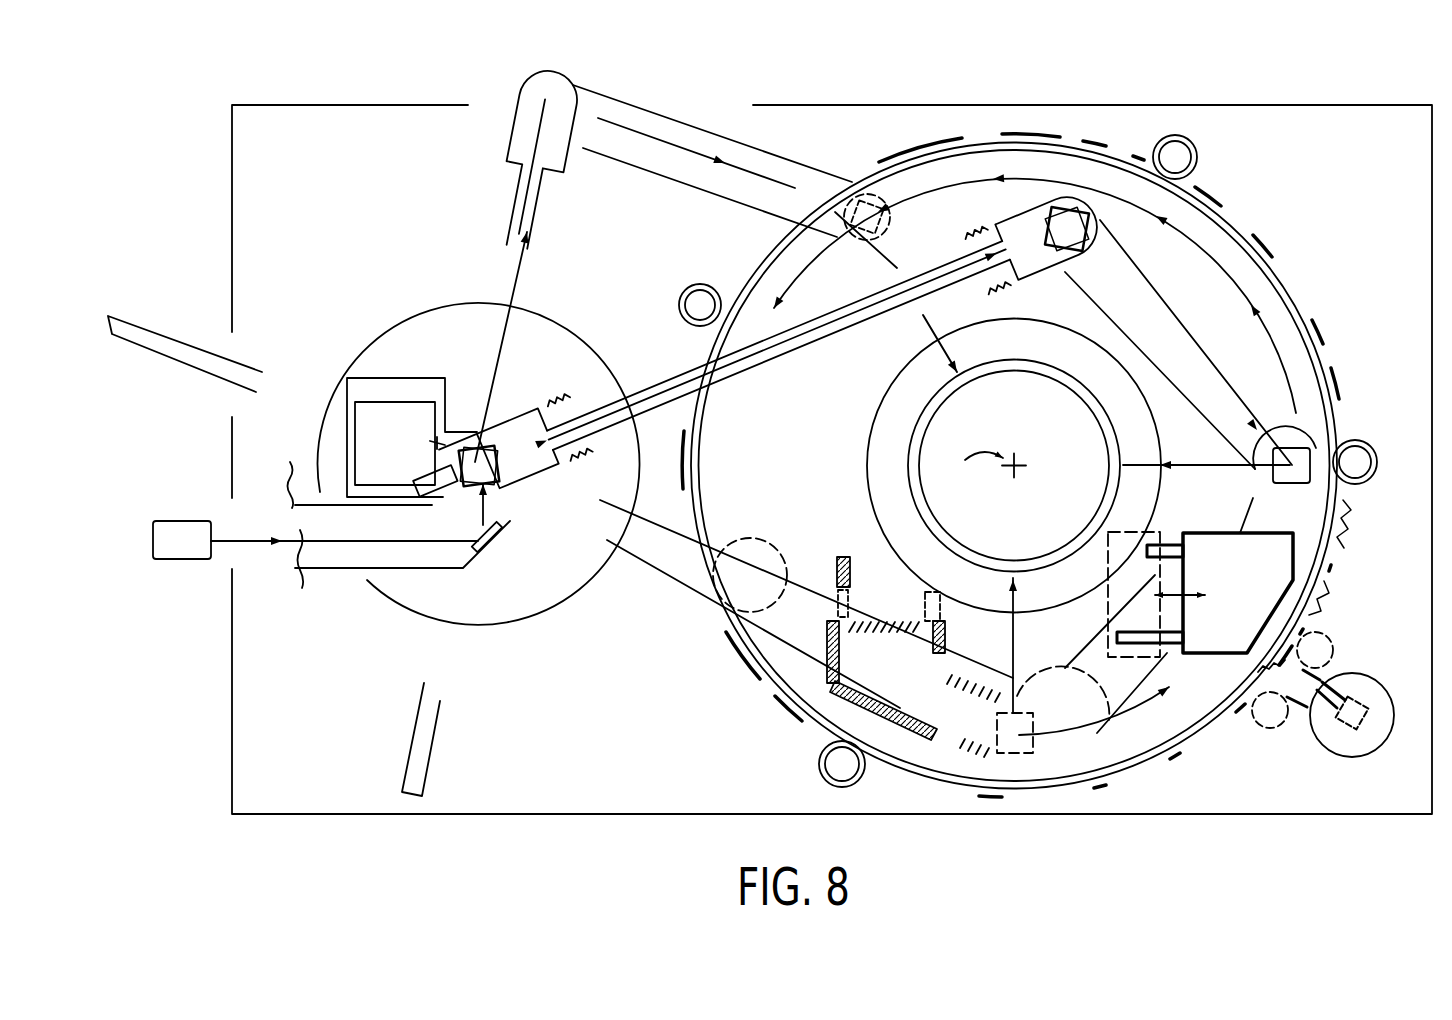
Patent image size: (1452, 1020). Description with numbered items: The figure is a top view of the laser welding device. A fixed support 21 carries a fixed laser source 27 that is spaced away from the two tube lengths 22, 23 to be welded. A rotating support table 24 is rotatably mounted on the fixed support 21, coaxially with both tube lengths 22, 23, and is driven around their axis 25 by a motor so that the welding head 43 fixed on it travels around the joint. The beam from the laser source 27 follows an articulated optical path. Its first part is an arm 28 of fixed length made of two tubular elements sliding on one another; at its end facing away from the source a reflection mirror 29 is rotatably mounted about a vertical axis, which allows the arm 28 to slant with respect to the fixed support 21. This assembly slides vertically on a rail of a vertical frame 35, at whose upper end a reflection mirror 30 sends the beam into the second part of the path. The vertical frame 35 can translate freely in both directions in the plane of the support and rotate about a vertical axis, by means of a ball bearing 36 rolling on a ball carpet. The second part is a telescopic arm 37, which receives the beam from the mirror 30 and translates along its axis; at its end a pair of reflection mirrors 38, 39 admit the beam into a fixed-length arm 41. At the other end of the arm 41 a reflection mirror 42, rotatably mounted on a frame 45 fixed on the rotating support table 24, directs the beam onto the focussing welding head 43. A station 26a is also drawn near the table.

The fixed support 21 is at (327, 709).
The tube length 22 is at (946, 466).
The tube length 23 is at (903, 482).
The rotating support table 24 is at (794, 436).
The axis 25 is at (988, 475).
The discharge station 26a is at (1378, 690).
The laser source 27 is at (186, 530).
The arm 28 is at (386, 509).
The reflection mirror 29 is at (512, 468).
The reflection mirror 30 is at (522, 531).
The vertical frame 35 is at (373, 377).
The ball bearing 36 is at (462, 349).
The telescopic arm 37 is at (655, 383).
The reflection mirror 38 is at (1073, 194).
The reflection mirror 39 is at (1059, 161).
The arm 41 is at (1227, 348).
The reflection mirror 42 is at (1298, 446).
The welding head 43 is at (1325, 422).
The frame 45 is at (1260, 573).